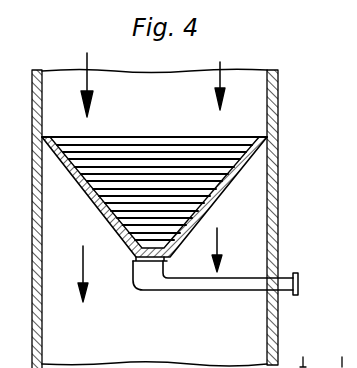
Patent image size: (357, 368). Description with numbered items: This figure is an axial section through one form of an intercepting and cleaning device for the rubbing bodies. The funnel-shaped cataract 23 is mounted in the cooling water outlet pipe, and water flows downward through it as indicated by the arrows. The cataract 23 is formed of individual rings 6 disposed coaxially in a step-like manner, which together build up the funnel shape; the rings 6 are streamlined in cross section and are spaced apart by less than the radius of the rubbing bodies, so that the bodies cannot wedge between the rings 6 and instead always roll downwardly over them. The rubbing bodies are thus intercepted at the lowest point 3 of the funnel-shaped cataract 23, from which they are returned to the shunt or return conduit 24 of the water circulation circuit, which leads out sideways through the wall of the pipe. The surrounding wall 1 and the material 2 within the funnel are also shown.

The container wall 1 is at (356, 168).
The layered bulk material 2 is at (220, 153).
The lowest point 3 is at (197, 233).
The rings 6 is at (232, 180).
The funnel-shaped cataract 23 is at (92, 203).
The return conduit 24 is at (273, 287).